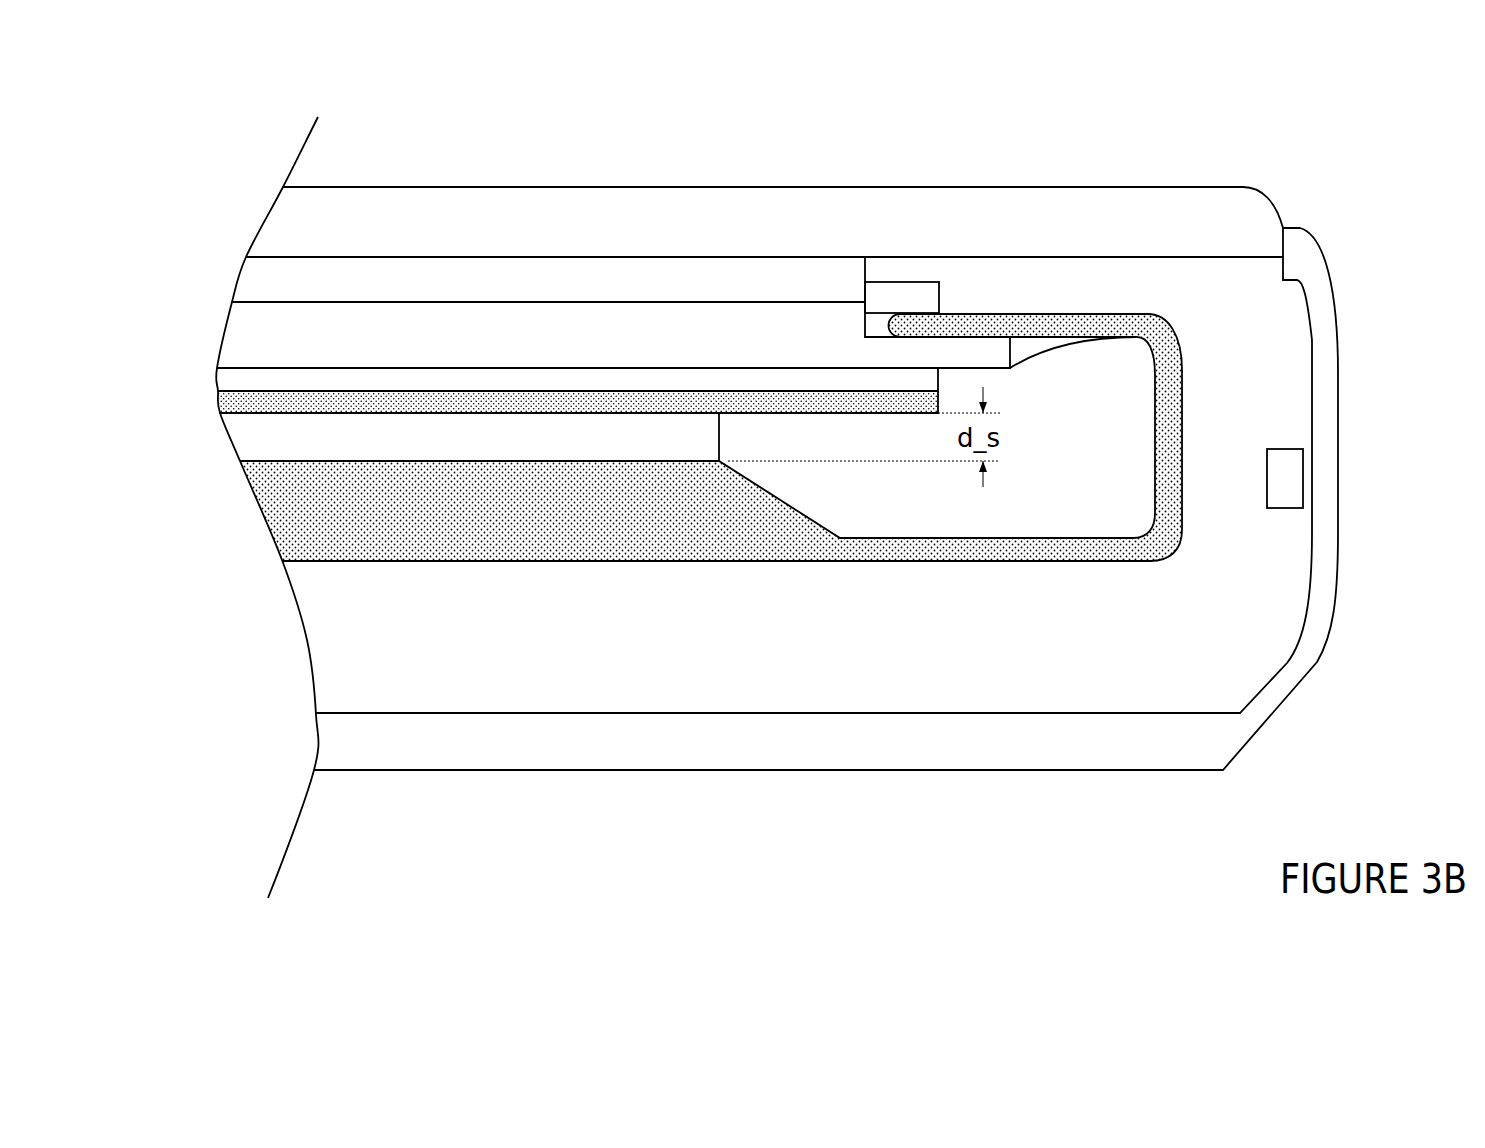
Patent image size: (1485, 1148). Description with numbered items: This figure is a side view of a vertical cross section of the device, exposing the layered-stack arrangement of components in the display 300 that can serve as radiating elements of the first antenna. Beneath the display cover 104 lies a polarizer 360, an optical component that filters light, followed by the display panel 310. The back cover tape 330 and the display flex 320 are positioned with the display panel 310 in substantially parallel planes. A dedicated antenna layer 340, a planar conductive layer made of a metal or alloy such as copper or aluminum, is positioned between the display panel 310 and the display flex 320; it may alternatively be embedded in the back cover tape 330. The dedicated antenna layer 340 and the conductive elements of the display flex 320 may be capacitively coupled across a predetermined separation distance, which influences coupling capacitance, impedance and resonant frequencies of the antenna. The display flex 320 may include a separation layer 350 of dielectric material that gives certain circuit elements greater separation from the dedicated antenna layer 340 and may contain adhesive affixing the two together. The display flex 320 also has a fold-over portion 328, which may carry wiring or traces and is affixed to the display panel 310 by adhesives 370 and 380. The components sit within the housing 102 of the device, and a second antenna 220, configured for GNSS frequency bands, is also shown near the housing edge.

The display 300 is at (176, 206).
The display cover 104 is at (865, 210).
The housing 102 is at (1302, 263).
The polarizer 360 is at (262, 268).
The display panel 310 is at (262, 322).
The adhesive 370 is at (920, 305).
The back cover tape 330 is at (255, 385).
The adhesive 380 is at (1030, 348).
The dedicated antenna layer 340 is at (270, 405).
The display flex 320 is at (248, 497).
The fold-over portion 328 is at (1172, 357).
The separation layer 350 is at (690, 445).
The second antenna 220 is at (1303, 487).